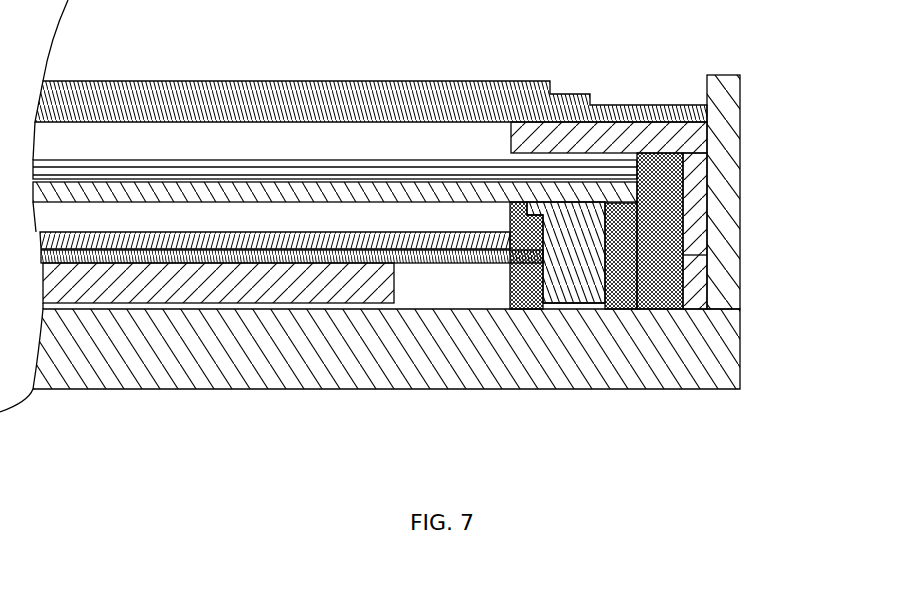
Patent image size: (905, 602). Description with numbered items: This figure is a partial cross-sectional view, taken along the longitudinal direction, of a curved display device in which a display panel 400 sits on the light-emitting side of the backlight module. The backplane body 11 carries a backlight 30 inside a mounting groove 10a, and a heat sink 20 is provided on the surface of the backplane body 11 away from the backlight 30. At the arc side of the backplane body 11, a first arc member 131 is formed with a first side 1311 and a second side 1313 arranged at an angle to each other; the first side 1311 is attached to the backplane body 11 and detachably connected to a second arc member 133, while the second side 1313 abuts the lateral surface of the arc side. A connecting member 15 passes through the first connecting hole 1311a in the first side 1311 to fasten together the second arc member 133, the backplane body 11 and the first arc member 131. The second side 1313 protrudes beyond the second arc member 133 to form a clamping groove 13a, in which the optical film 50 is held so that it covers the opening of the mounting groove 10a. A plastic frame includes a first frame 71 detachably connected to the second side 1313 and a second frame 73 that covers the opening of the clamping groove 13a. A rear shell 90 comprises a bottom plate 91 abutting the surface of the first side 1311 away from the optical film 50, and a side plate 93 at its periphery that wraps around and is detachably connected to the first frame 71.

The display panel 400 is at (498, 83).
The optical film 50 is at (313, 178).
The clamping groove 13a is at (634, 179).
The second frame 73 is at (655, 130).
The first frame 71 is at (699, 185).
The second arc member 133 is at (628, 218).
The second side 1313 is at (673, 237).
The first side 1311 is at (662, 322).
The first connecting hole 1311a is at (592, 305).
The first arc member 131 is at (685, 322).
The connecting member 15 is at (556, 283).
The mounting groove 10a is at (174, 216).
The backplane body 11 is at (272, 250).
The heat sink 20 is at (358, 288).
The backlight 30 is at (450, 242).
The bottom plate 91 is at (623, 365).
The side plate 93 is at (720, 290).
The rear shell 90 is at (386, 276).